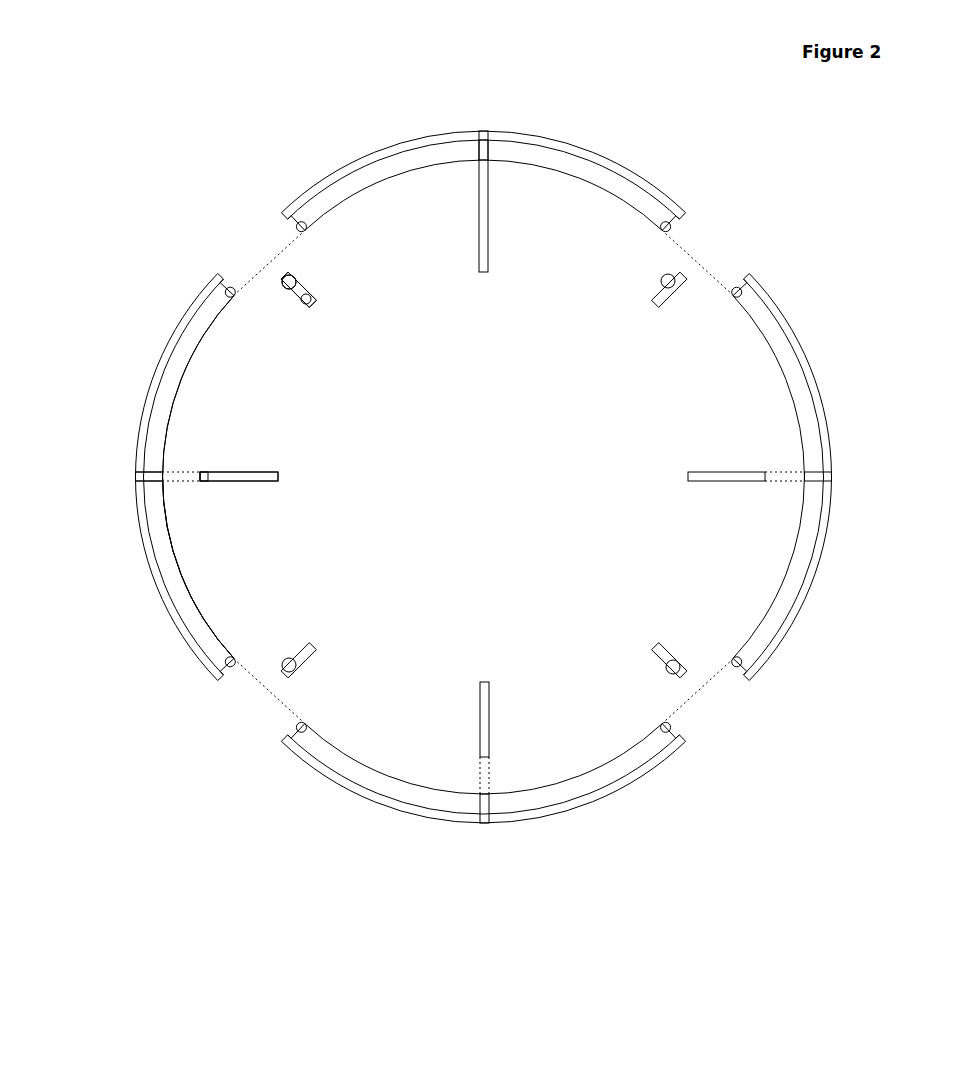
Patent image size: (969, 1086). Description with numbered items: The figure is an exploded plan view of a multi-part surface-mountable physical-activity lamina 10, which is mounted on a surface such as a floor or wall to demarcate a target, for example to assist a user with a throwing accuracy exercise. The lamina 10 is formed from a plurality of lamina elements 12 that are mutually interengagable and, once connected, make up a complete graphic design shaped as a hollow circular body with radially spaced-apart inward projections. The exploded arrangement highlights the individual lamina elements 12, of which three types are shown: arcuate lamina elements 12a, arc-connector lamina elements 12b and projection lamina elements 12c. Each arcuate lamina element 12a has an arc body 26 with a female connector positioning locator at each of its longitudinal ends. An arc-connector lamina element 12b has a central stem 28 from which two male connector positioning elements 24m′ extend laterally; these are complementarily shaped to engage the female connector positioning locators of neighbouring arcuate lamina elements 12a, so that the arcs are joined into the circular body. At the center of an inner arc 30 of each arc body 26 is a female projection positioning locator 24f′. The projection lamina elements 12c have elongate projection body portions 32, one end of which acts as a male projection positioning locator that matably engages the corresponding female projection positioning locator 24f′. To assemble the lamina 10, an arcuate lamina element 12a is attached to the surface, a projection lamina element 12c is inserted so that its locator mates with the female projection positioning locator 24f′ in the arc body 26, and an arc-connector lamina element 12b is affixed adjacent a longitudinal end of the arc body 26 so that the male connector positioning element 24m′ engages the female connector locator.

The multi-part surface-mountable physical-activity lamina 10 is at (118, 185).
The lamina elements 12 is at (787, 853).
The arcuate lamina elements 12a is at (500, 126).
The arc-connector lamina elements 12b is at (319, 306).
The projection lamina elements 12c is at (487, 272).
The female projection positioning locator 24f′ is at (232, 284).
The male connector positioning elements 24m′ is at (306, 276).
The arc body 26 is at (173, 401).
The central stem 28 is at (290, 275).
The inner arc 30 is at (182, 561).
The elongate projection body portions 32 is at (237, 470).